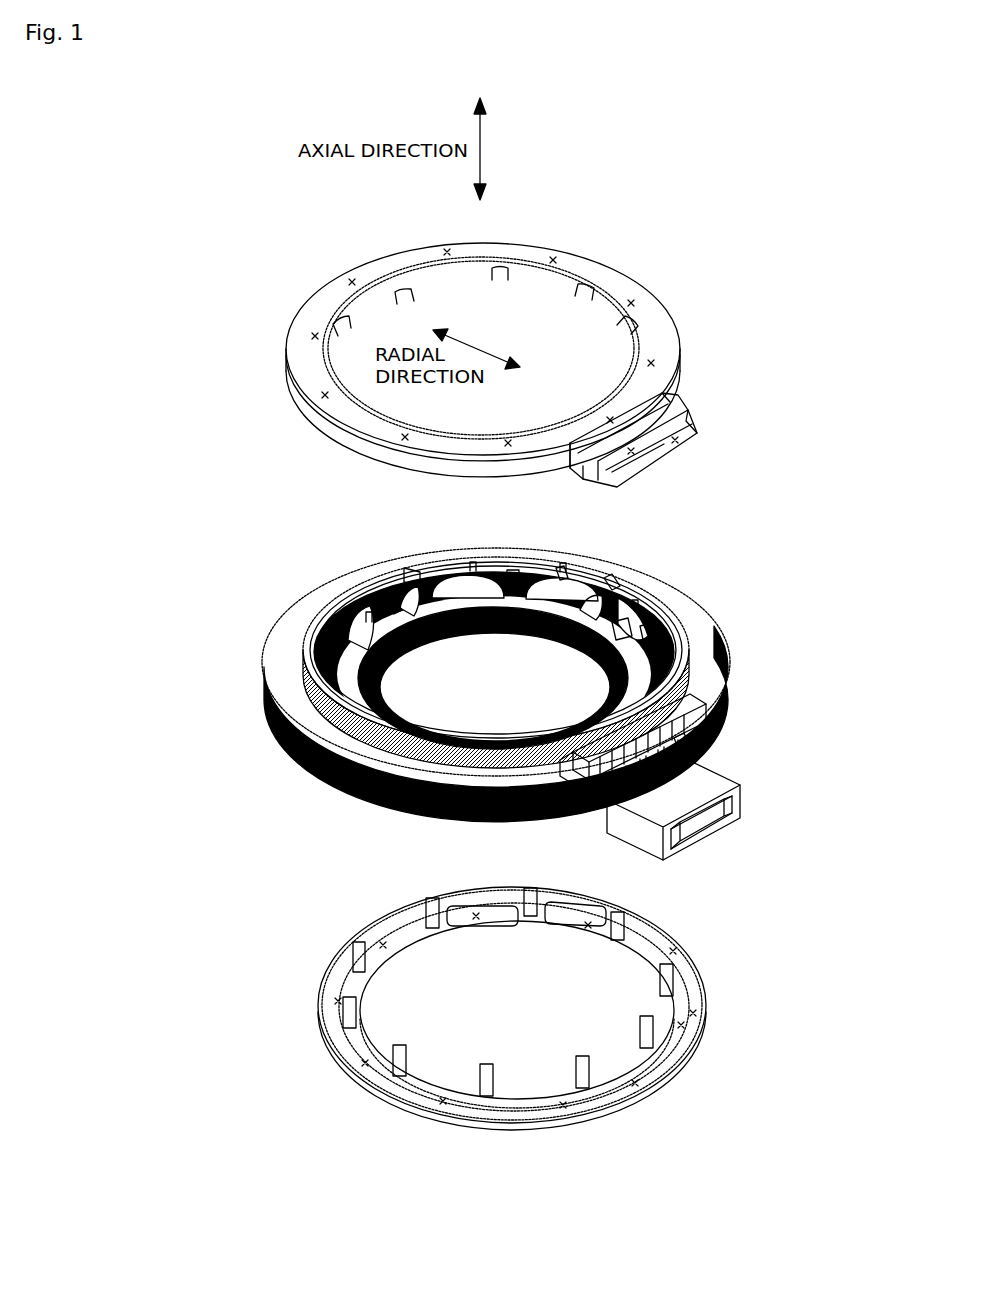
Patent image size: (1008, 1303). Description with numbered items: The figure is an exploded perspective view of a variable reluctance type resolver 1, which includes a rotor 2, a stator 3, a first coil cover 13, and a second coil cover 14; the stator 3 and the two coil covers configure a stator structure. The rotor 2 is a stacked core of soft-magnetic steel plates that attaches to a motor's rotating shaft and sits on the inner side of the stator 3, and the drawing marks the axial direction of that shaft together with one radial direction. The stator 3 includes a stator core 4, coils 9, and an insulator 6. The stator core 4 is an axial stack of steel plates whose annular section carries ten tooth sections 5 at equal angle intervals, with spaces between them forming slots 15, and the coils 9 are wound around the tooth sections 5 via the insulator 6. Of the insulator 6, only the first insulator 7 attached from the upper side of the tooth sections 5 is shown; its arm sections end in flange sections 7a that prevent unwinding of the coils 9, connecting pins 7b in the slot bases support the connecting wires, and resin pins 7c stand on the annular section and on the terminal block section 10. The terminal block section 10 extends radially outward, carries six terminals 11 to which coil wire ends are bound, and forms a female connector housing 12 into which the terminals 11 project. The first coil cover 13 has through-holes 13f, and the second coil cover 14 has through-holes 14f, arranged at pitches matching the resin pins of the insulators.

The resolver 1 is at (661, 183).
The rotor 2 is at (357, 670).
The stator 3 is at (263, 658).
The stator core 4 is at (357, 767).
The tooth sections 5 is at (622, 630).
The insulator 6 is at (418, 567).
The first insulator 7 is at (537, 620).
The flange sections 7a is at (390, 607).
The connecting pins 7b is at (613, 582).
The resin pins 7c is at (565, 573).
The coils 9 is at (650, 633).
The terminal block section 10 is at (583, 773).
The terminals 11 is at (667, 720).
The female connector housing 12 is at (713, 777).
The first coil cover 13 is at (520, 252).
The through-holes 13f is at (632, 302).
The second coil cover 14 is at (447, 1103).
The through-holes 14f is at (683, 1005).
The slots 15 is at (513, 569).